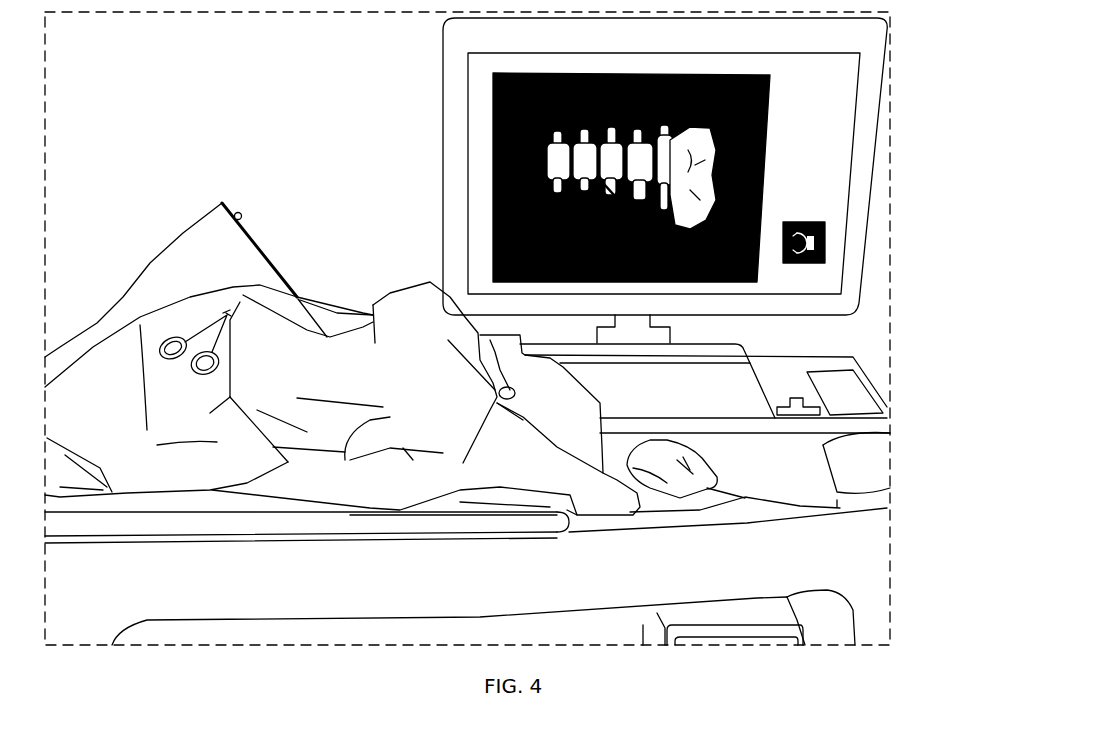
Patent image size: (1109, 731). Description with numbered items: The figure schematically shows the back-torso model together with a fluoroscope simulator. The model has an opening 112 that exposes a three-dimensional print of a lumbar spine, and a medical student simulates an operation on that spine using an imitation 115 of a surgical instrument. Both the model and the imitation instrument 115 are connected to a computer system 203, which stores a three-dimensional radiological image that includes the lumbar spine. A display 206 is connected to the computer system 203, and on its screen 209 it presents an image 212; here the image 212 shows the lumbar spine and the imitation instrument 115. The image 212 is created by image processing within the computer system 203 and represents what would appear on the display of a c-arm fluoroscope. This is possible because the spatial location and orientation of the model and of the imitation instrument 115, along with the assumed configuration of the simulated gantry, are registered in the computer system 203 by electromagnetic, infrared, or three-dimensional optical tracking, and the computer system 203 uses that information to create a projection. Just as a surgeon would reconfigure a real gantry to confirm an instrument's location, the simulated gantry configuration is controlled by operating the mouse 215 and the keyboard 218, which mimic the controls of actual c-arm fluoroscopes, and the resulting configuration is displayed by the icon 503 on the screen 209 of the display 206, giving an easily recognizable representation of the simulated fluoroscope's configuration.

The opening 112 is at (325, 317).
The imitation of a surgical instrument 115 is at (247, 223).
The computer system 203 is at (760, 610).
The display 206 is at (441, 162).
The display screen 209 is at (483, 80).
The image 212 is at (723, 183).
The mouse 215 is at (665, 438).
The keyboard 218 is at (797, 380).
The icon 503 is at (825, 235).